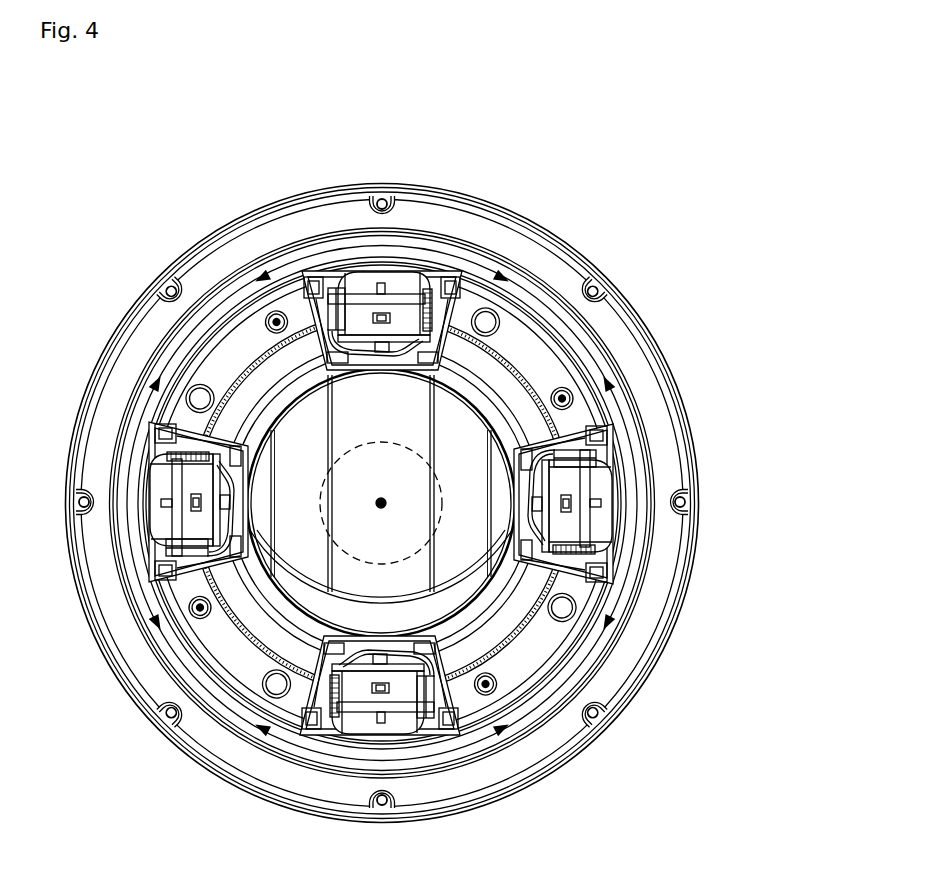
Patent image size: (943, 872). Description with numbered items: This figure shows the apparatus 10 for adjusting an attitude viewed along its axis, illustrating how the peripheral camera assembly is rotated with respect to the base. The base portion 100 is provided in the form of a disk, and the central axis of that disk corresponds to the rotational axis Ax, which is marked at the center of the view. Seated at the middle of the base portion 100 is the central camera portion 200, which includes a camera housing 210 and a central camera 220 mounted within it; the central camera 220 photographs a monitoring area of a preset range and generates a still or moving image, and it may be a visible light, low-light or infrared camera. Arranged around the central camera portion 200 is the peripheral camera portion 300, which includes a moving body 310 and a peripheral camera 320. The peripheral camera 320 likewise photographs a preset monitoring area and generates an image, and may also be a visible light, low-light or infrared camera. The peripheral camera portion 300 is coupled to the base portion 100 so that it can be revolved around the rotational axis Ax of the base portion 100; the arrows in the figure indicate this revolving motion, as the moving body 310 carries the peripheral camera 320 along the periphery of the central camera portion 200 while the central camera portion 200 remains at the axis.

The apparatus for adjusting an attitude 10 is at (396, 99).
The base portion 100 is at (460, 193).
The central camera portion 200 is at (764, 617).
The camera housing 210 is at (498, 566).
The central camera 220 is at (397, 563).
The peripheral camera portion 300 is at (768, 437).
The moving body 310 is at (610, 454).
The peripheral camera 320 is at (600, 502).
The rotational axis Ax is at (381, 502).